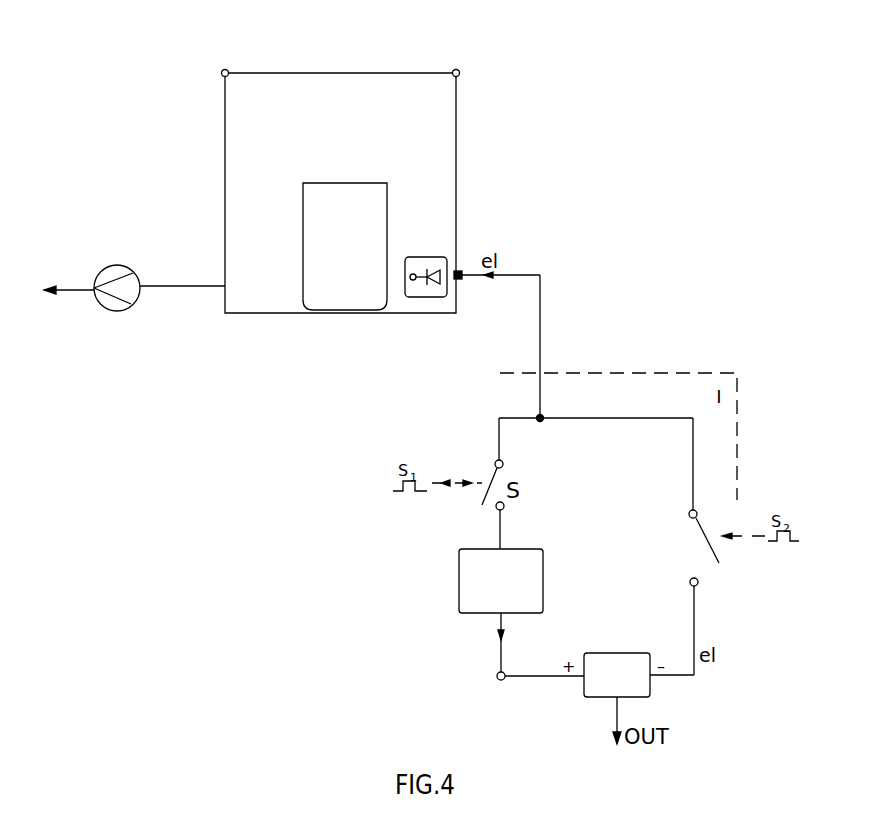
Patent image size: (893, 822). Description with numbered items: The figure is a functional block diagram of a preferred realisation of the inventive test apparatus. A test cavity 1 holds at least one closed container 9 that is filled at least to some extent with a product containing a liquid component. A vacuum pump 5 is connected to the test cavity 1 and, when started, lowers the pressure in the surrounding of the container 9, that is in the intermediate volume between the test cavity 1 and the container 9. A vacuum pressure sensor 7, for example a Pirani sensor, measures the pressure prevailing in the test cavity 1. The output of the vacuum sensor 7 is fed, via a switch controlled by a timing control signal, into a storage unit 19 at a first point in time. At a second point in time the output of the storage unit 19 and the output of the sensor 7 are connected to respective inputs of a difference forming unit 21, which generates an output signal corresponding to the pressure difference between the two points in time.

The test cavity 1 is at (290, 73).
The vacuum pump 5 is at (115, 311).
The vacuum pressure sensor 7 is at (427, 297).
The closed container 9 is at (303, 223).
The storage unit 19 is at (458, 582).
The difference forming unit 21 is at (616, 652).